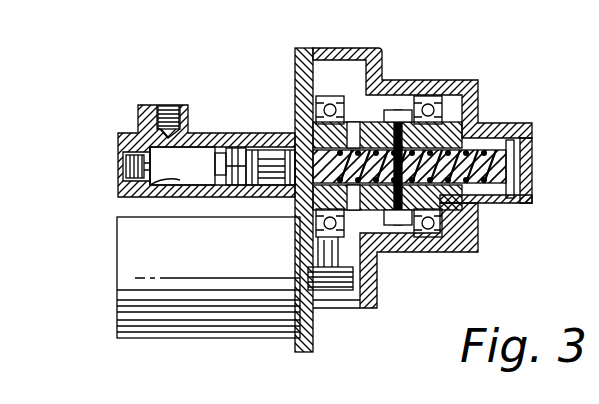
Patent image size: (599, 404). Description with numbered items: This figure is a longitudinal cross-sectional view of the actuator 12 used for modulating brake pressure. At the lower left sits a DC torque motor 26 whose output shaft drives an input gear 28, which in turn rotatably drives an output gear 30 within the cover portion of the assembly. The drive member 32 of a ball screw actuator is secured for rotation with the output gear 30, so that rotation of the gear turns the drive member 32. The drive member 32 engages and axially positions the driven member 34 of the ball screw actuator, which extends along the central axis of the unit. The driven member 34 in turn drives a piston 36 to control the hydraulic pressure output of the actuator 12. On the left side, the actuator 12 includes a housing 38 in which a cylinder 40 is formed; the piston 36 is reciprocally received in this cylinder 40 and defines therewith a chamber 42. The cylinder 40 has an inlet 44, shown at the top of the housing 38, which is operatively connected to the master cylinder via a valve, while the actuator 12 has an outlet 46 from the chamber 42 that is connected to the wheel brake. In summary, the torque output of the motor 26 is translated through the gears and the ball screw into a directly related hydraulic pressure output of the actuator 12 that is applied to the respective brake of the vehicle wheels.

The actuator 12 is at (95, 120).
The DC torque motor 26 is at (130, 278).
The input gear 28 is at (343, 308).
The output gear 30 is at (330, 63).
The drive member 32 is at (357, 135).
The driven member 34 is at (477, 183).
The piston 36 is at (257, 150).
The housing 38 is at (200, 160).
The cylinder 40 is at (172, 181).
The chamber 42 is at (222, 148).
The inlet 44 is at (163, 105).
The outlet 46 is at (125, 163).